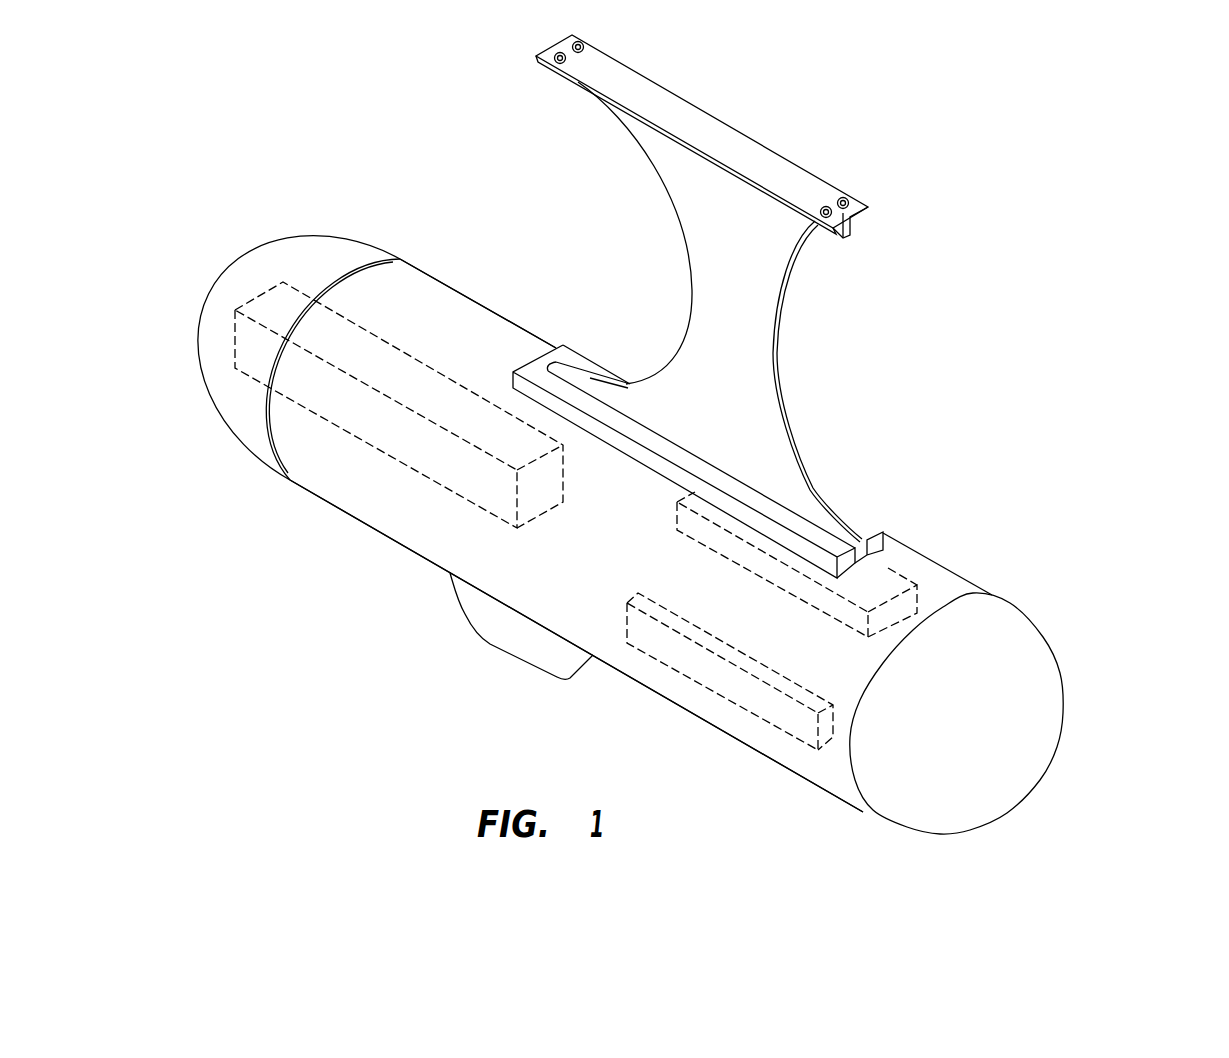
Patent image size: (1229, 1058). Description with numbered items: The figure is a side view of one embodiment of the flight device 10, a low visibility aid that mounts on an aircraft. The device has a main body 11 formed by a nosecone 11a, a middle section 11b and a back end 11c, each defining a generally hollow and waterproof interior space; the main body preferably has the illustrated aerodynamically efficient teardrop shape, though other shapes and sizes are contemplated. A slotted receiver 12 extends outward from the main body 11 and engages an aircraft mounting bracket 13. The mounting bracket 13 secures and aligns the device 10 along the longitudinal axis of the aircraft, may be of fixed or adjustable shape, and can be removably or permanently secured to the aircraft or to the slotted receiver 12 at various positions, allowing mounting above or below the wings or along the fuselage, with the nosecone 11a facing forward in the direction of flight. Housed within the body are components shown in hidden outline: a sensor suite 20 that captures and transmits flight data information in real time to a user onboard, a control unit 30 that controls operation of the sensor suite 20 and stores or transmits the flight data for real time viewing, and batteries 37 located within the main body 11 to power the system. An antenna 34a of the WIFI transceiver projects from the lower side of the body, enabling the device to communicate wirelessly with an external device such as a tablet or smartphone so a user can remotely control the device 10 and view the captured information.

The flight device 10 is at (352, 168).
The main body 11 is at (1130, 654).
The nosecone 11a is at (248, 248).
The middle section 11b is at (417, 530).
The back end 11c is at (1025, 713).
The slotted receiver 12 is at (853, 523).
The aircraft mounting bracket 13 is at (748, 342).
The sensor suite 20 is at (440, 403).
The control unit 30 is at (897, 573).
The antenna 34a is at (502, 625).
The batteries 37 is at (693, 667).